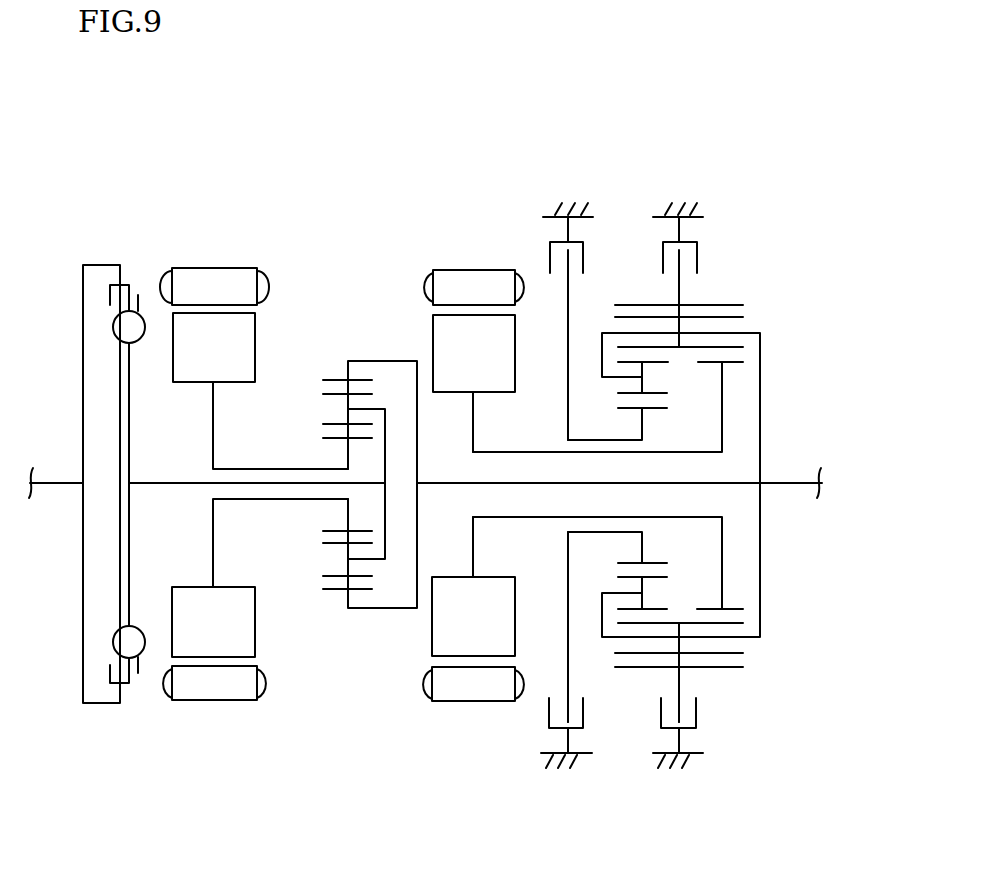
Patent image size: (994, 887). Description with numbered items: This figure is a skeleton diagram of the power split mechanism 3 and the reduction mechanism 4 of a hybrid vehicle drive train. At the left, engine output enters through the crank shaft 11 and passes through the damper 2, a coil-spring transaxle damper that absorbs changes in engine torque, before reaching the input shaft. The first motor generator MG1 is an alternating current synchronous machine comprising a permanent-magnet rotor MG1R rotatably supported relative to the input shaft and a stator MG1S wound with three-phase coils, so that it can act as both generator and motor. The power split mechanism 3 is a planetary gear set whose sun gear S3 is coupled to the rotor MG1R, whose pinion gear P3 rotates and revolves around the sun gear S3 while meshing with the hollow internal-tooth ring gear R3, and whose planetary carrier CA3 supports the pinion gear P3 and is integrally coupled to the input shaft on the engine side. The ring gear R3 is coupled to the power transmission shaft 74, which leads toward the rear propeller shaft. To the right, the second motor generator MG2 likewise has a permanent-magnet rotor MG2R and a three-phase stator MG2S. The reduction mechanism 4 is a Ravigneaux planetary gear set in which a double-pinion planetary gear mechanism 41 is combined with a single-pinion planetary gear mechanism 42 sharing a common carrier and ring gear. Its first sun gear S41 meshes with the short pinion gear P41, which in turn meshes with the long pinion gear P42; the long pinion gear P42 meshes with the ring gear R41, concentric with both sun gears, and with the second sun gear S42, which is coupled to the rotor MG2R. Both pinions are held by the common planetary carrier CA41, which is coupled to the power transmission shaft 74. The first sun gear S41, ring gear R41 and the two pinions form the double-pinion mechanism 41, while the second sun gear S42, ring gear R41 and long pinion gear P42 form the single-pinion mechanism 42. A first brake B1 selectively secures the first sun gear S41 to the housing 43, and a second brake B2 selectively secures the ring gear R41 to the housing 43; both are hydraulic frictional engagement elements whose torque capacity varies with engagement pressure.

The damper 2 is at (104, 243).
The crank shaft 11 is at (53, 482).
The power split mechanism 3 is at (345, 458).
The first motor generator MG1 is at (244, 433).
The stator MG1S is at (240, 267).
The rotor MG1R is at (172, 358).
The ring gear R3 is at (332, 380).
The pinion gear P3 is at (346, 417).
The sun gear S3 is at (340, 439).
The planetary carrier CA3 is at (385, 533).
The second motor generator MG2 is at (467, 434).
The stator MG2S is at (446, 270).
The rotor MG2R is at (516, 355).
The reduction mechanism 4 is at (656, 426).
The double-pinion planetary gear mechanism 41 is at (555, 295).
The single-pinion planetary gear mechanism 42 is at (718, 281).
The housing 43 is at (578, 203).
The first brake B1 is at (588, 249).
The second brake B2 is at (660, 249).
The ring gear R41 is at (730, 303).
The long pinion gear P42 is at (628, 321).
The planetary carrier CA41 is at (753, 330).
The second sun gear S42 is at (733, 365).
The first sun gear S41 is at (633, 410).
The short pinion gear P41 is at (642, 383).
The power transmission shaft 74 is at (788, 488).